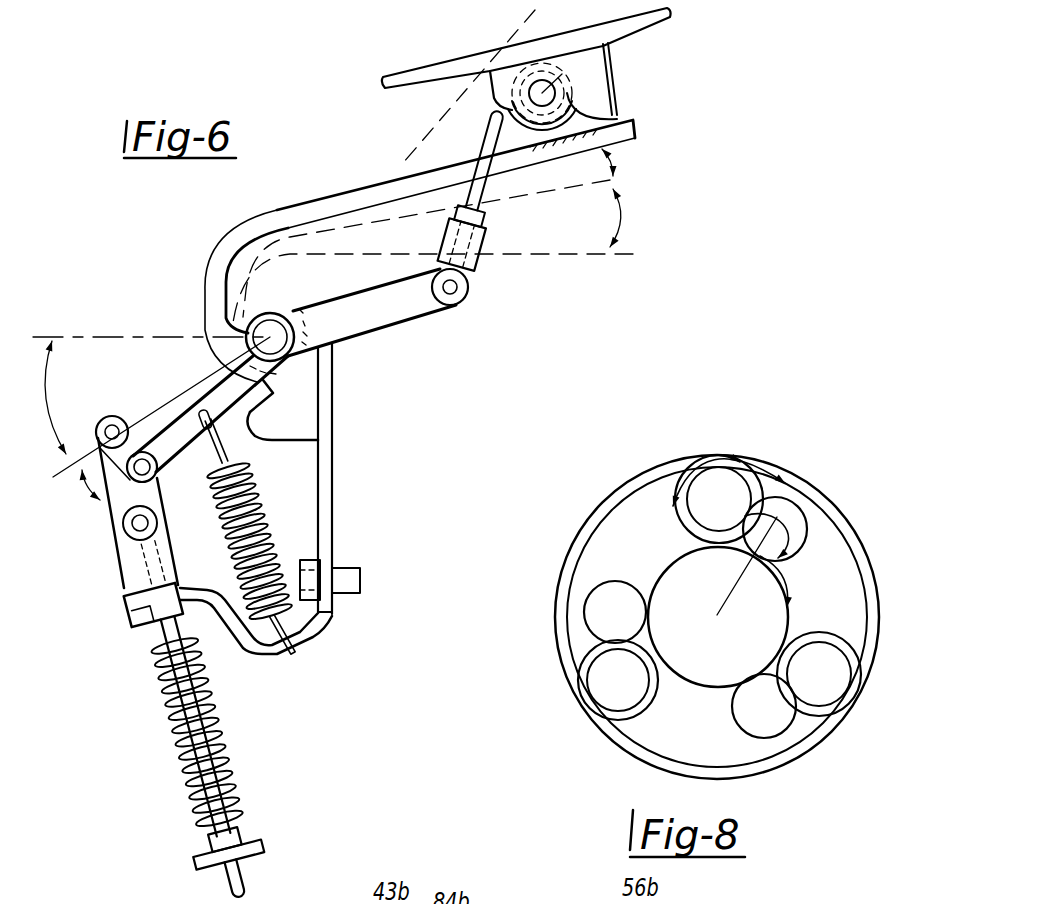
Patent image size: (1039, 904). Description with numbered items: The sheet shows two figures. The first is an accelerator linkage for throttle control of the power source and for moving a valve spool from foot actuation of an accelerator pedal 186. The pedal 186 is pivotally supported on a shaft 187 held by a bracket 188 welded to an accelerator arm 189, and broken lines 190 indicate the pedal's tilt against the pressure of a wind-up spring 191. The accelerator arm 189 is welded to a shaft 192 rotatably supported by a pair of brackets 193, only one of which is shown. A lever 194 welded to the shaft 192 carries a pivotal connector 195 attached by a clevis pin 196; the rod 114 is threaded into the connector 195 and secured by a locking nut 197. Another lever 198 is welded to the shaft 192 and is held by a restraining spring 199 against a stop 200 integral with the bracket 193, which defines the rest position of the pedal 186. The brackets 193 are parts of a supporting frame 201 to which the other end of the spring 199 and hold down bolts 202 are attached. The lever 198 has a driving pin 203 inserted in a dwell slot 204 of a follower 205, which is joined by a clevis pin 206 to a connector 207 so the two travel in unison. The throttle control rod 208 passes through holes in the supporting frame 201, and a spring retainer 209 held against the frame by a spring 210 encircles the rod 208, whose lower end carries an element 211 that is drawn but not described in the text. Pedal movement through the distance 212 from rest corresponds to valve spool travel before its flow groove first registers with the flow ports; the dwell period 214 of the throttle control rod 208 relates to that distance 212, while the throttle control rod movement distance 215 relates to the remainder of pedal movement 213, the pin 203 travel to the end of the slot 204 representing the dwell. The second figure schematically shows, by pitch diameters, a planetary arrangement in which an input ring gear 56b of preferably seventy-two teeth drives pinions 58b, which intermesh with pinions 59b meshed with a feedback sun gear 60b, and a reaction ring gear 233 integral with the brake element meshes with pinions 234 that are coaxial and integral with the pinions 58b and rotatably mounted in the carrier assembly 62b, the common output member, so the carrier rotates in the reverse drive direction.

In FIG. 6, the rod 114 is at (493, 201).
In FIG. 6, the accelerator pedal 186 is at (412, 68).
In FIG. 6, the shaft 187 is at (568, 80).
In FIG. 6, the bracket 188 is at (603, 102).
In FIG. 6, the accelerator arm 189 is at (258, 222).
In FIG. 6, the broken lines 190 is at (443, 113).
In FIG. 6, the wind-up spring 191 is at (631, 121).
In FIG. 6, the shaft 192 is at (247, 330).
In FIG. 6, the bracket 193 is at (303, 390).
In FIG. 6, the lever 194 is at (363, 326).
In FIG. 6, the pivotal connector 195 is at (478, 272).
In FIG. 6, the clevis pin 196 is at (448, 306).
In FIG. 6, the locking nut 197 is at (484, 232).
In FIG. 6, the lever 198 is at (167, 427).
In FIG. 6, the restraining spring 199 is at (273, 520).
In FIG. 6, the stop 200 is at (253, 413).
In FIG. 6, the supporting frame 201 is at (325, 523).
In FIG. 6, the hold down bolts 202 is at (303, 562).
In FIG. 6, the driving pin 203 is at (158, 470).
In FIG. 6, the dwell slot 204 is at (137, 393).
In FIG. 6, the follower 205 is at (110, 506).
In FIG. 6, the clevis pin 206 is at (128, 536).
In FIG. 6, the connector 207 is at (103, 608).
In FIG. 6, the throttle control rod 208 is at (210, 770).
In FIG. 6, the spring retainer 209 is at (132, 622).
In FIG. 6, the spring 210 is at (203, 813).
In FIG. 6, the nut 211 is at (130, 884).
In FIG. 6, the distance 212 is at (615, 160).
In FIG. 6, the accelerator pedal movement 213 is at (620, 199).
In FIG. 6, the dwell period 214 is at (80, 489).
In FIG. 6, the throttle control rod movement distance 215 is at (151, 395).
In FIG. 8, the input ring gear 56b is at (600, 722).
In FIG. 8, the pinion 58b is at (590, 695).
In FIG. 8, the pinion 59b is at (632, 562).
In FIG. 8, the feedback sun gear 60b is at (667, 557).
In FIG. 8, the carrier assembly 62b is at (733, 590).
In FIG. 8, the ring gear 233 is at (833, 737).
In FIG. 8, the pinions 234 is at (860, 655).